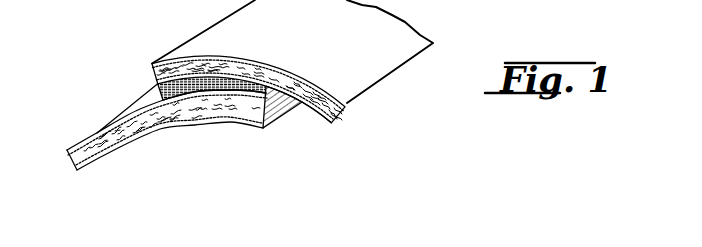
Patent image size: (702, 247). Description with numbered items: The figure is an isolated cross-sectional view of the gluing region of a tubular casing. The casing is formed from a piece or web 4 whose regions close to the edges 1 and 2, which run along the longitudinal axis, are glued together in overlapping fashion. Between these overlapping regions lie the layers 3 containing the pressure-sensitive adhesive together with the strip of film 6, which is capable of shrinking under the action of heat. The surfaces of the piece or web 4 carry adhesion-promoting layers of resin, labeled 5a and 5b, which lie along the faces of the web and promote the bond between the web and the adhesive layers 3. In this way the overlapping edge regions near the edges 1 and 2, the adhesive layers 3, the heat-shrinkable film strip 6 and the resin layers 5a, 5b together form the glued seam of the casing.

The edge 1 is at (151, 78).
The edge 2 is at (286, 120).
The layer containing pressure-sensitive adhesive 3 is at (202, 82).
The piece or web 4 is at (133, 113).
The adhesion-promoting layer of resin 5a is at (68, 148).
The adhesion-promoting layer of resin 5b is at (122, 142).
The strip of film 6 is at (218, 86).